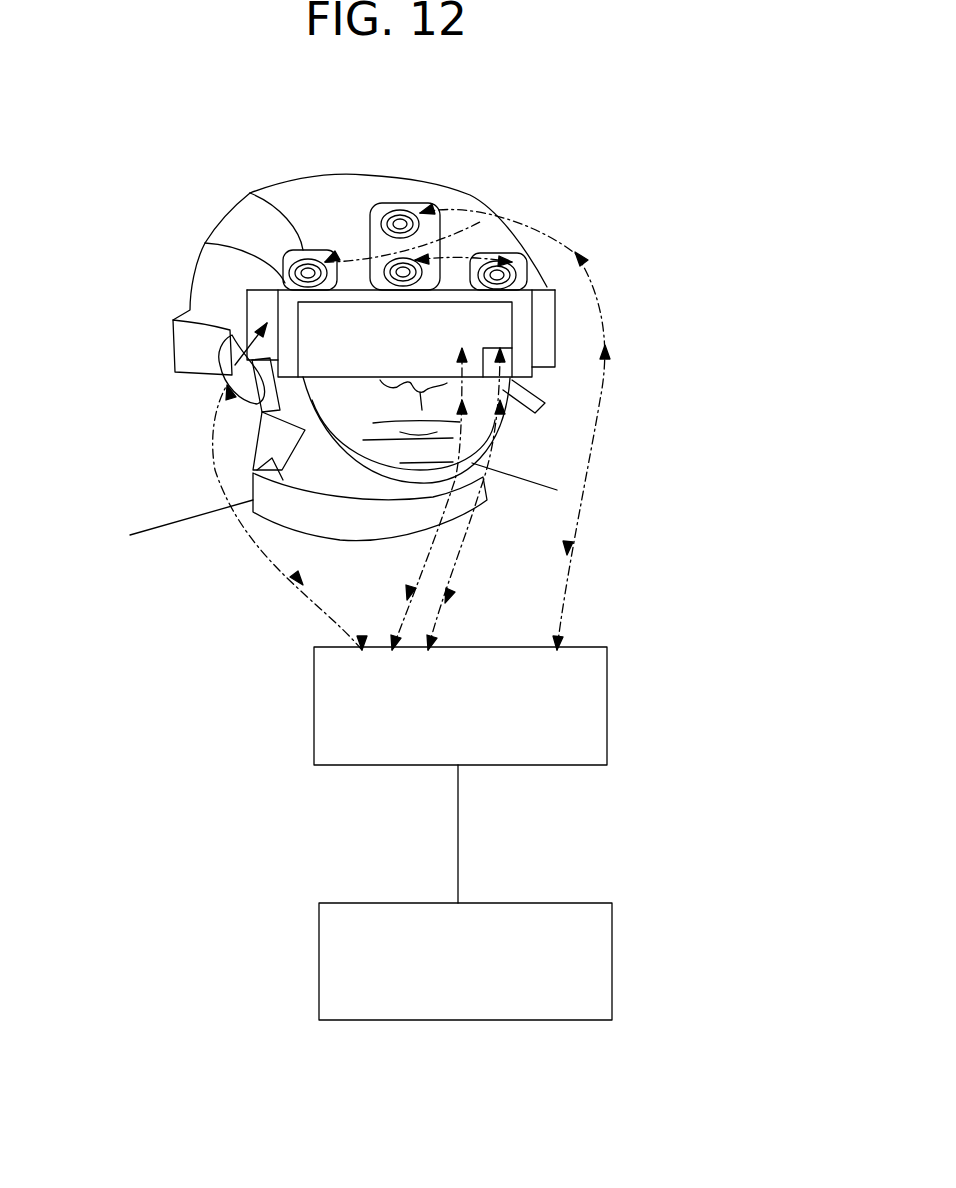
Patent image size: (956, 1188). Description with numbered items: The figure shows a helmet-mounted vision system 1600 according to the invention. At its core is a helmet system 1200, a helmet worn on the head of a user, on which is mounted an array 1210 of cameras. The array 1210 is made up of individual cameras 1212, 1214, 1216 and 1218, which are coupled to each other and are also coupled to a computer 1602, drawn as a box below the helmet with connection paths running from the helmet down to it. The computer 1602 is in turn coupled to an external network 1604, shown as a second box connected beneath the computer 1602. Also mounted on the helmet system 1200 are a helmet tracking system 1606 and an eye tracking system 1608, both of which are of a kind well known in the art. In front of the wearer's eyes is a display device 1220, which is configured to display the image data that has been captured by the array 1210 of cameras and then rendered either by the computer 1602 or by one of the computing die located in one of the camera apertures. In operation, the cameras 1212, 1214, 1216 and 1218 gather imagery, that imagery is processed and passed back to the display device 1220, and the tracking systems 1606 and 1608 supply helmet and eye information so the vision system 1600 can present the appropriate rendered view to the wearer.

The helmet-mounted vision system 1600 is at (665, 168).
The helmet system 1200 is at (588, 224).
The array of cameras 1210 is at (374, 185).
The camera 1212 is at (397, 213).
The camera 1214 is at (247, 197).
The camera 1216 is at (397, 264).
The camera 1218 is at (500, 288).
The display device 1220 is at (405, 339).
The computer 1602 is at (345, 767).
The external network 1604 is at (352, 1022).
The helmet tracking system 1606 is at (256, 307).
The eye tracking system 1608 is at (508, 360).